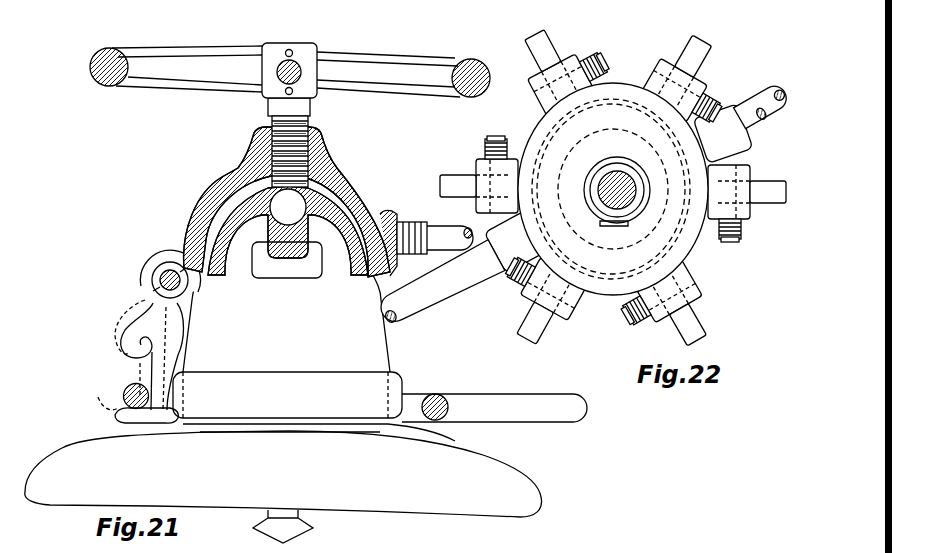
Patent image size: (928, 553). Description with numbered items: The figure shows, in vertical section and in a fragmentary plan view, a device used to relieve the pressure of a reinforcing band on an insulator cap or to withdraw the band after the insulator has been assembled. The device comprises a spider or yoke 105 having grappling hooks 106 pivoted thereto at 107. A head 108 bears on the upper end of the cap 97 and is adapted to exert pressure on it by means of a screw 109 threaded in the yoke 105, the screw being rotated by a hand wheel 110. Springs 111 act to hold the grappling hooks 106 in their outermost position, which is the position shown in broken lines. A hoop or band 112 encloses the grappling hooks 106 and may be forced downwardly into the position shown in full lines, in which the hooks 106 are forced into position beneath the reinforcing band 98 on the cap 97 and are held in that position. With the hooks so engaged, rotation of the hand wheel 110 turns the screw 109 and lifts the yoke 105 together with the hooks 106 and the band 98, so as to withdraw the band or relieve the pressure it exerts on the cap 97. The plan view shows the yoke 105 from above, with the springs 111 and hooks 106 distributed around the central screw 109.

In FIG. 21, the insulator cap 97 is at (372, 352).
In FIG. 21, the reinforcing band 98 is at (394, 386).
In FIG. 21, the spider or yoke 105 is at (222, 183).
In FIG. 21, the grappling hooks 106 is at (142, 364).
In FIG. 21, the pivot 107 is at (172, 256).
In FIG. 21, the head 108 is at (323, 203).
In FIG. 21, the screw 109 is at (312, 127).
In FIG. 21, the hand wheel 110 is at (147, 55).
In FIG. 22, the springs 111 is at (577, 58).
In FIG. 21, the hoop or band 112 is at (125, 393).